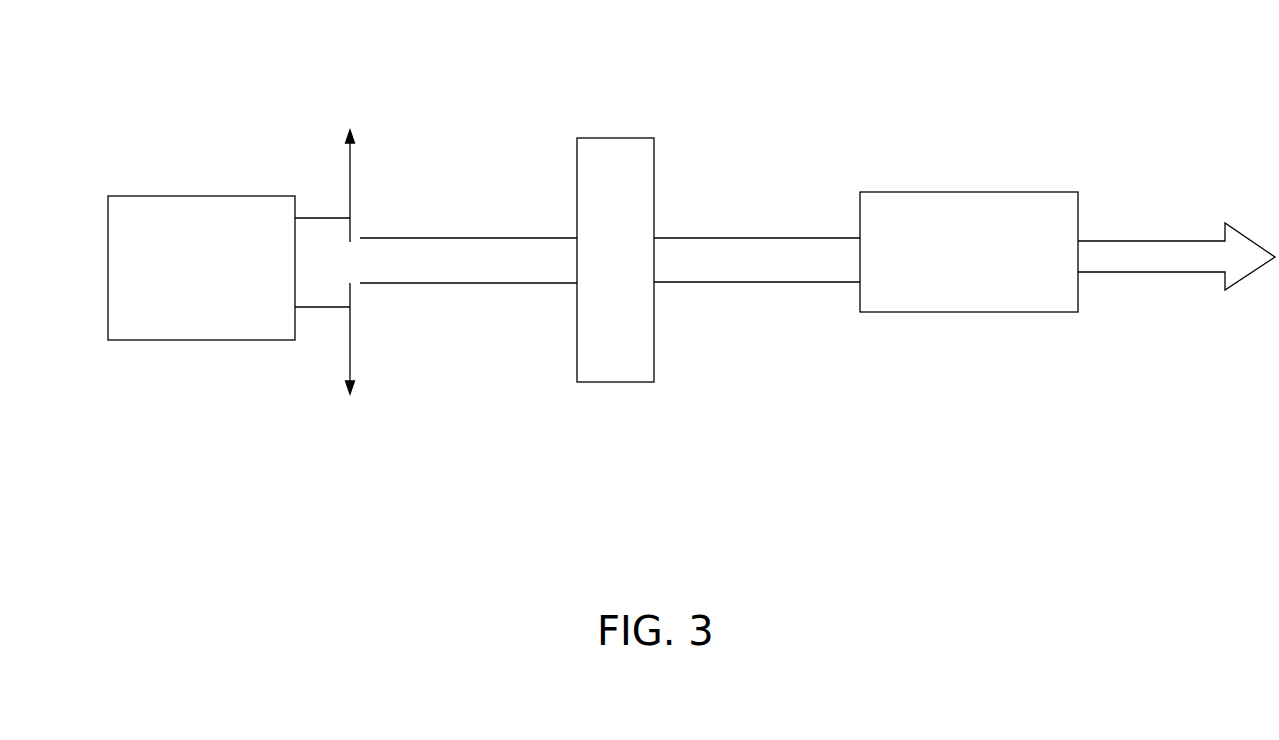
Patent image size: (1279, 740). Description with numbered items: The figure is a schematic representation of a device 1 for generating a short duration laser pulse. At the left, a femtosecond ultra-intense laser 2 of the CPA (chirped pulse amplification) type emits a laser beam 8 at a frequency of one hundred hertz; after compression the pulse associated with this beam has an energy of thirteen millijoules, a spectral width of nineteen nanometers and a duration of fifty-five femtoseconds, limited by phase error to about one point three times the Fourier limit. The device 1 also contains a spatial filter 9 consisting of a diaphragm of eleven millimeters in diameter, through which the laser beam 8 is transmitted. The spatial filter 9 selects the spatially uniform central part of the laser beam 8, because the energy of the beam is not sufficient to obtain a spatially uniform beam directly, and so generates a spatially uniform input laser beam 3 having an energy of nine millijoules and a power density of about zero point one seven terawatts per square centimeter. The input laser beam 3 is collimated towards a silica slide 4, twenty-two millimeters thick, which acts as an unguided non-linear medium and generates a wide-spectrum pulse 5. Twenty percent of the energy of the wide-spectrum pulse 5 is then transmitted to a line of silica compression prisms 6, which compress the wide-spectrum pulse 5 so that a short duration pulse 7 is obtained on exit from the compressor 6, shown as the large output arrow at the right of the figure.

The device for generating a short duration laser pulse 1 is at (278, 470).
The femtosecond ultra-intense laser 2 is at (185, 208).
The input laser beam 3 is at (498, 226).
The silica slide 4 is at (620, 162).
The wide-spectrum pulse 5 is at (766, 214).
The line of compression prisms 6 is at (935, 213).
The short duration pulse 7 is at (1157, 288).
The laser beam 8 is at (314, 204).
The spatial filter 9 is at (352, 352).